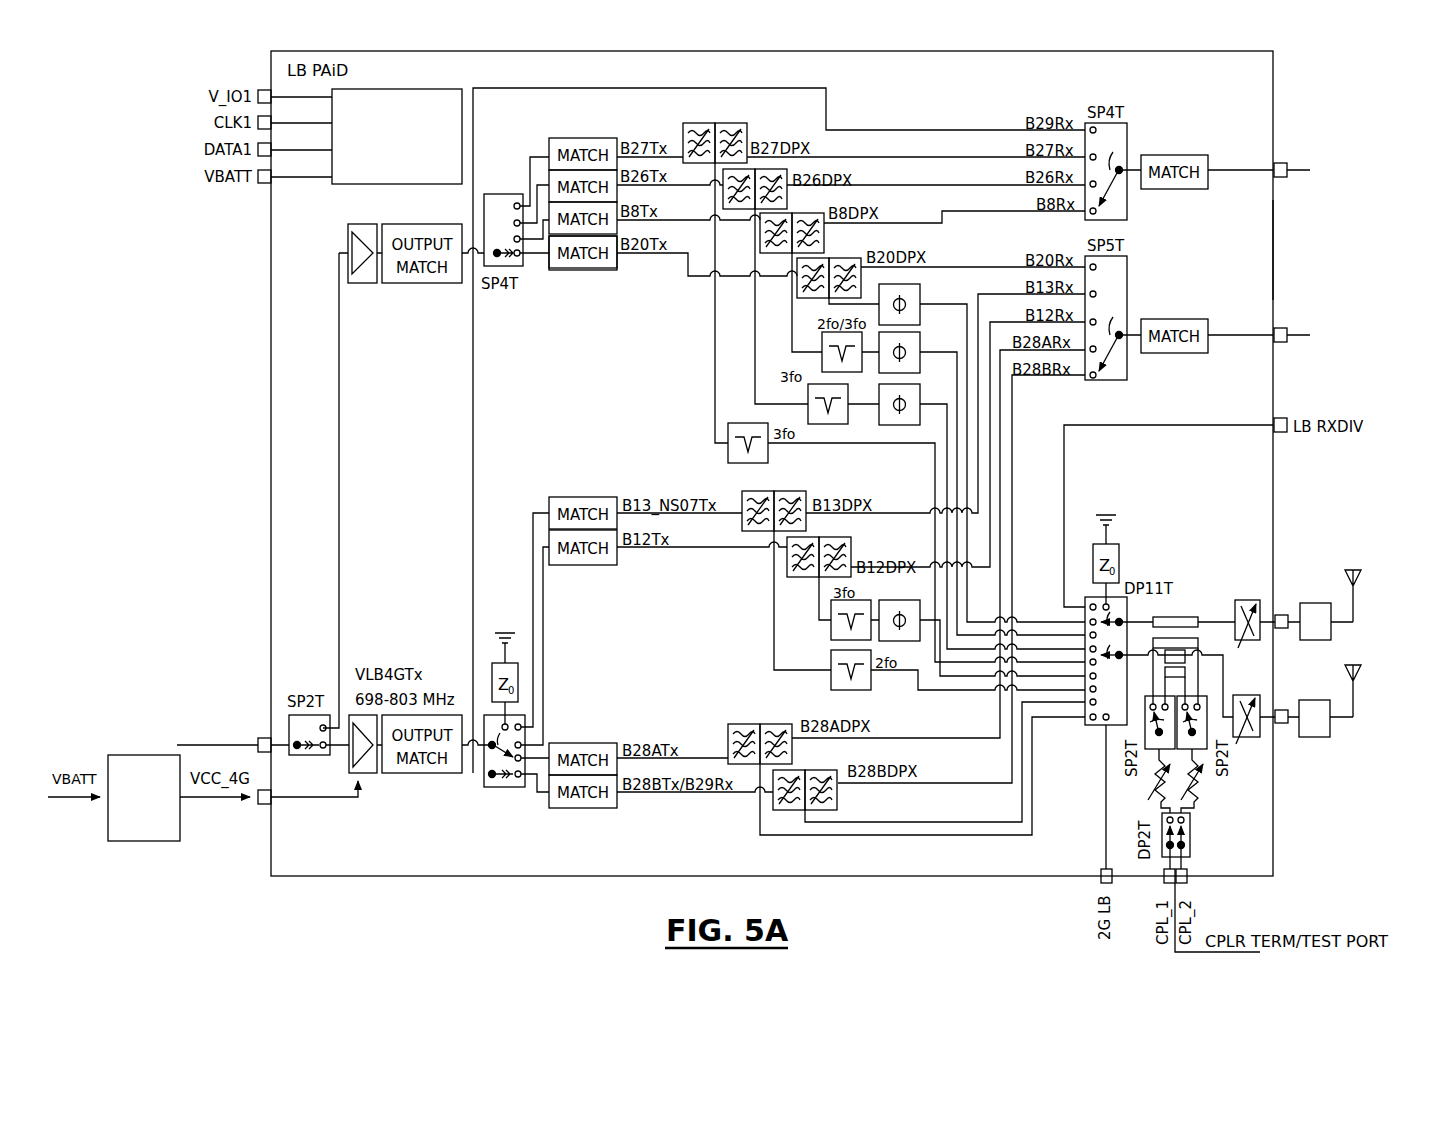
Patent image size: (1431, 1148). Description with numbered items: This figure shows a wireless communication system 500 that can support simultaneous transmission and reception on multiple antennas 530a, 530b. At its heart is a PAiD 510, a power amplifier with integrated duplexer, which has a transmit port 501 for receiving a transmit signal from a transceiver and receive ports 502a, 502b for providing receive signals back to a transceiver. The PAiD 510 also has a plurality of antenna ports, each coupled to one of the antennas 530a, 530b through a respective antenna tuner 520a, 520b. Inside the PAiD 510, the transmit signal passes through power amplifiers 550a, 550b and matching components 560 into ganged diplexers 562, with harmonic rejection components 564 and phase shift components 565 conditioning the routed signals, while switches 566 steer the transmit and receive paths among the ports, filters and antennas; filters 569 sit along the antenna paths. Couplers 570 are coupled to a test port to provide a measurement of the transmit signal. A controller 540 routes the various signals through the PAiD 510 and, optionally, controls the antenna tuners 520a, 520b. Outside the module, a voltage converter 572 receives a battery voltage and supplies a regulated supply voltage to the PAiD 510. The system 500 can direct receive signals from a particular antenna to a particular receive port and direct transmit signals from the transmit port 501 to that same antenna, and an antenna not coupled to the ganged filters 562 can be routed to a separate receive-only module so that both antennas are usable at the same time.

The wireless communication system 500 is at (1295, 104).
The transmit port 501 is at (242, 745).
The receive port 502a is at (1292, 178).
The receive port 502b is at (1292, 342).
The PAiD 510 is at (1273, 248).
The antenna tuner 520a is at (1302, 598).
The antenna tuner 520b is at (1306, 739).
The antenna 530a is at (1348, 568).
The antenna 530b is at (1348, 664).
The controller 540 is at (382, 184).
The power amplifier 550a is at (368, 283).
The power amplifier 550b is at (366, 773).
The matching components 560 is at (577, 134).
The diplexers 562 is at (702, 120).
The harmonic rejection components 564 is at (718, 450).
The phase shift components 565 is at (898, 430).
The switches 566 is at (524, 824).
The filters 569 is at (1254, 596).
The couplers 570 is at (1185, 610).
The voltage converter 572 is at (147, 841).